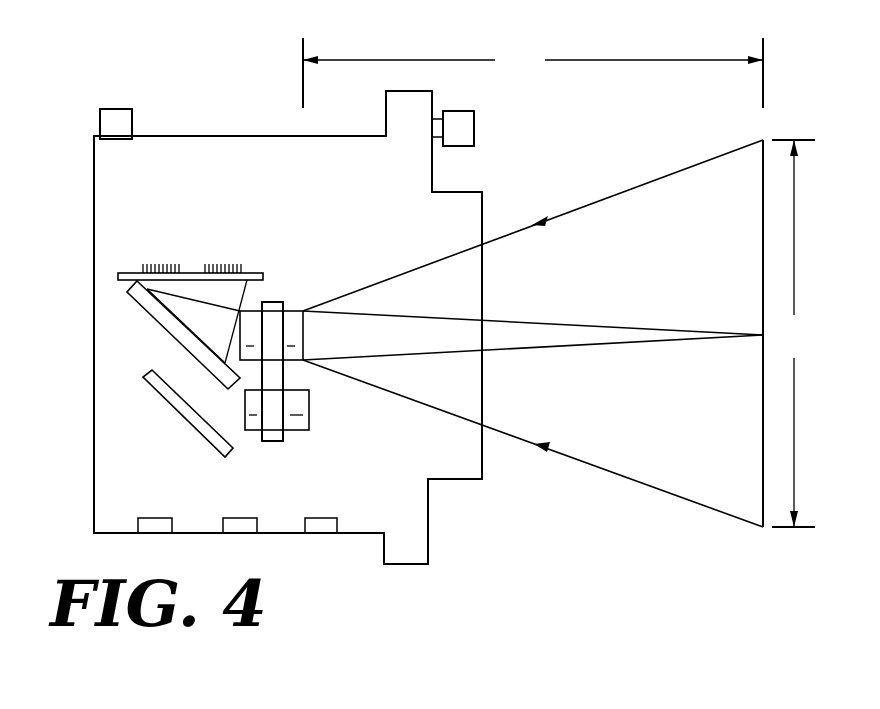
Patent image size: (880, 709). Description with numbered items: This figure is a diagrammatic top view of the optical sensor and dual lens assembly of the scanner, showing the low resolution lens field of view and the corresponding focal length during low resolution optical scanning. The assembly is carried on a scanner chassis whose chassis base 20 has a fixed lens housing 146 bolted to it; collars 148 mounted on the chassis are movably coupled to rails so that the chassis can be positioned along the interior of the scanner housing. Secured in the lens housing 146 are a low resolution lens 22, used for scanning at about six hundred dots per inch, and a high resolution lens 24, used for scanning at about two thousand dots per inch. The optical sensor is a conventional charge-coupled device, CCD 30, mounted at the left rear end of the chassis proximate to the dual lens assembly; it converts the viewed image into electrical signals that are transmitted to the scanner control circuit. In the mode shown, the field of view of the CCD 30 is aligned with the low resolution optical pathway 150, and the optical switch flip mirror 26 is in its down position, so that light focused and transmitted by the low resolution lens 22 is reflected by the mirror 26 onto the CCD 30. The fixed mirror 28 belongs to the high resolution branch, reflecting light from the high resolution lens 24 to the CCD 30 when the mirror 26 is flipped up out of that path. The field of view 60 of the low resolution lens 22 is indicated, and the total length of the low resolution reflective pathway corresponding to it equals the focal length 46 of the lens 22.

The chassis base 20 is at (447, 463).
The low resolution lens 22 is at (291, 318).
The high resolution lens 24 is at (297, 420).
The flip mirror 26 is at (176, 330).
The fixed mirror 28 is at (188, 413).
The CCD 30 is at (192, 273).
The focal length 46 is at (533, 73).
The field of view 60 is at (789, 333).
The lens housing 146 is at (275, 404).
The collars 148 is at (463, 128).
The low resolution optical pathway 150 is at (438, 244).